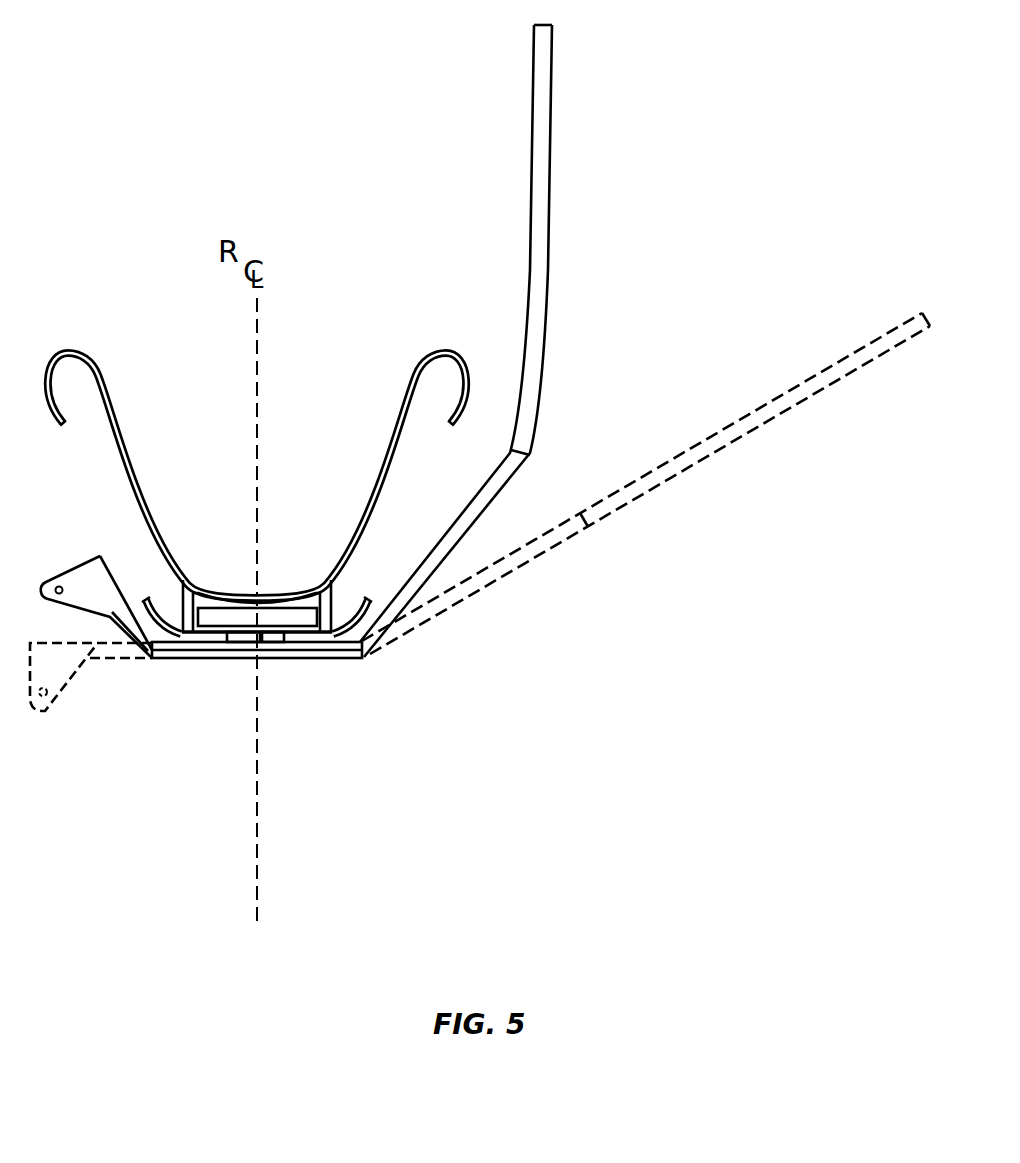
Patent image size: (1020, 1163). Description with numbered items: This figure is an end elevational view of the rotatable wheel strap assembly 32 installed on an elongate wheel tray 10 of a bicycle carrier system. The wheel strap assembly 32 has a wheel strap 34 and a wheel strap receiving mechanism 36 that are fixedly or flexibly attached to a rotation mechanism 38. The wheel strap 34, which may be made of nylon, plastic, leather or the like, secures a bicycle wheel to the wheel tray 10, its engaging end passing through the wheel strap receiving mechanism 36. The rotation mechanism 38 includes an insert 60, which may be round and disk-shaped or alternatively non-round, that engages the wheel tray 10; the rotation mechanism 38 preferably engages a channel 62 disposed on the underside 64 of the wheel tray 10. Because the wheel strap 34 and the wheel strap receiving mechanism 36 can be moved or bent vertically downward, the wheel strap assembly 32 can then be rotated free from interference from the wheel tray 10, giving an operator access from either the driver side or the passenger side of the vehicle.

The wheel tray 10 is at (118, 425).
The rotatable wheel strap assembly 32 is at (700, 128).
The wheel strap 34 is at (545, 130).
The wheel strap receiving mechanism 36 is at (72, 568).
The rotation mechanism 38 is at (264, 633).
The insert 60 is at (255, 612).
The channel 62 is at (243, 616).
The underside 64 is at (300, 649).